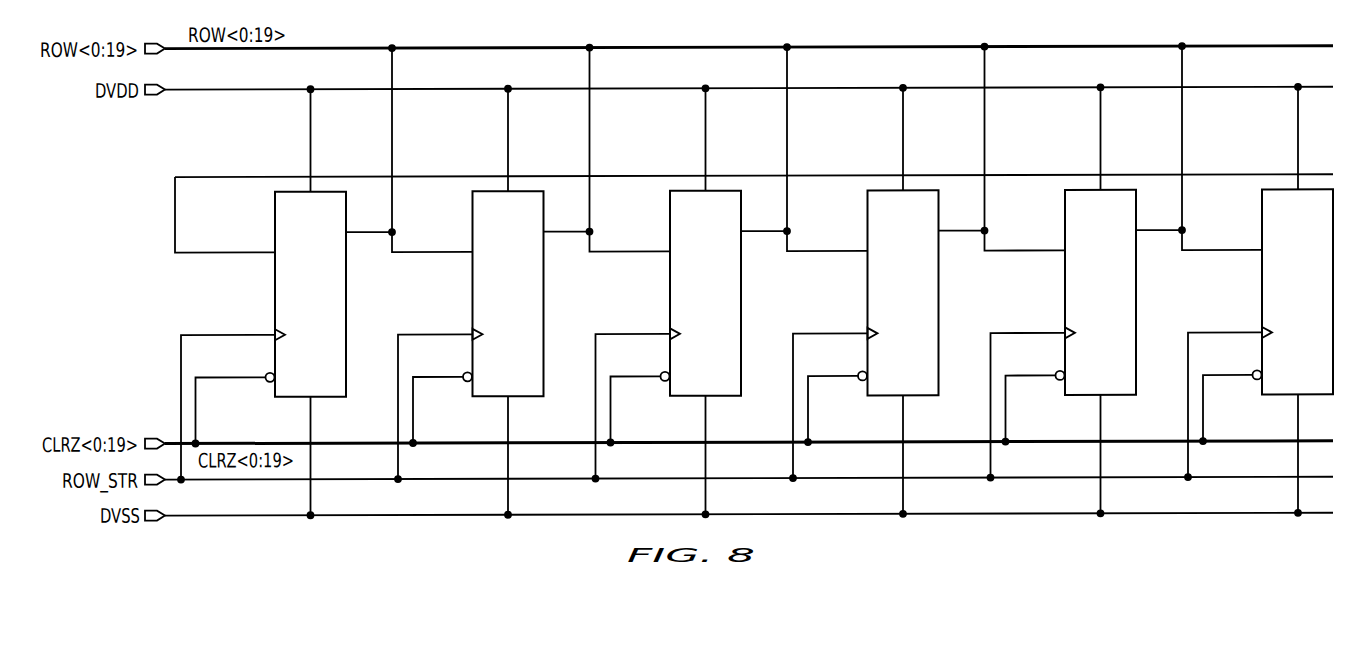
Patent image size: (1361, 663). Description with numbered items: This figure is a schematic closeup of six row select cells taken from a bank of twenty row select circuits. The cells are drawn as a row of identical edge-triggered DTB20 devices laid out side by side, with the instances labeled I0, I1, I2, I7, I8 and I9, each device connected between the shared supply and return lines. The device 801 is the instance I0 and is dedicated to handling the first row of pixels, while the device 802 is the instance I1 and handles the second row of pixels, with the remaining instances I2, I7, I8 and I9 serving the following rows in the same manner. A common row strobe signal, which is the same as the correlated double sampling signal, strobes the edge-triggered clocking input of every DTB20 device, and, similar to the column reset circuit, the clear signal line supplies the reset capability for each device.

The device 801 is at (274, 302).
The device 802 is at (481, 282).
The flip-flop instance I0 is at (293, 322).
The flip-flop instance I1 is at (490, 322).
The flip-flop instance I2 is at (679, 281).
The flip-flop instance I7 is at (876, 281).
The flip-flop instance I8 is at (1074, 280).
The flip-flop instance I9 is at (1246, 279).